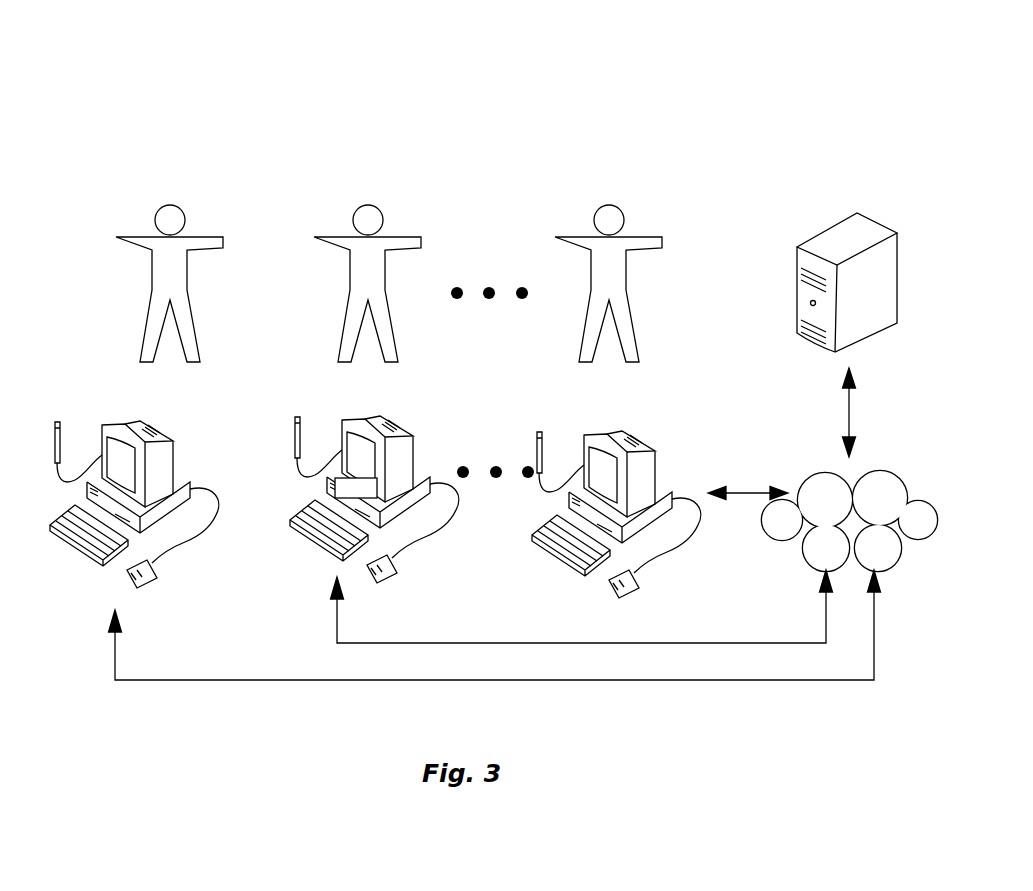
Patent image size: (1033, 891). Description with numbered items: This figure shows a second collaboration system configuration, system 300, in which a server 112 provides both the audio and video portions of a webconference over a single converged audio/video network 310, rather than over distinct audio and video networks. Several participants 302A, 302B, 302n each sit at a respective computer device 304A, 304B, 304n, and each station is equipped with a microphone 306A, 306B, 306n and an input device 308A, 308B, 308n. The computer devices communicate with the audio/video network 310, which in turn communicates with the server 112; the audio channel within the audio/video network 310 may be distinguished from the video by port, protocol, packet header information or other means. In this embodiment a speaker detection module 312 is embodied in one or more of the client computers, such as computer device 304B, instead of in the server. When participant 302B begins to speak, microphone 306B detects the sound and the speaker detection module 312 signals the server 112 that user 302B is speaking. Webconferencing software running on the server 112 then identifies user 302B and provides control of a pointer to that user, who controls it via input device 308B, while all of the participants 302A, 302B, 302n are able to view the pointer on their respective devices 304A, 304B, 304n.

The system 300 is at (803, 58).
The participant 302A is at (184, 214).
The participant 302B is at (382, 218).
The participant 302n is at (621, 211).
The computer device 304A is at (173, 442).
The computer device 304B is at (413, 437).
The computer device 304n is at (655, 452).
The microphone 306A is at (67, 433).
The microphone 306B is at (307, 428).
The microphone 306n is at (549, 443).
The input device 308A is at (157, 580).
The input device 308B is at (397, 575).
The input device 308n is at (639, 590).
The audio/video network 310 is at (878, 500).
The speaker detection module 312 is at (335, 487).
The server 112 is at (870, 235).